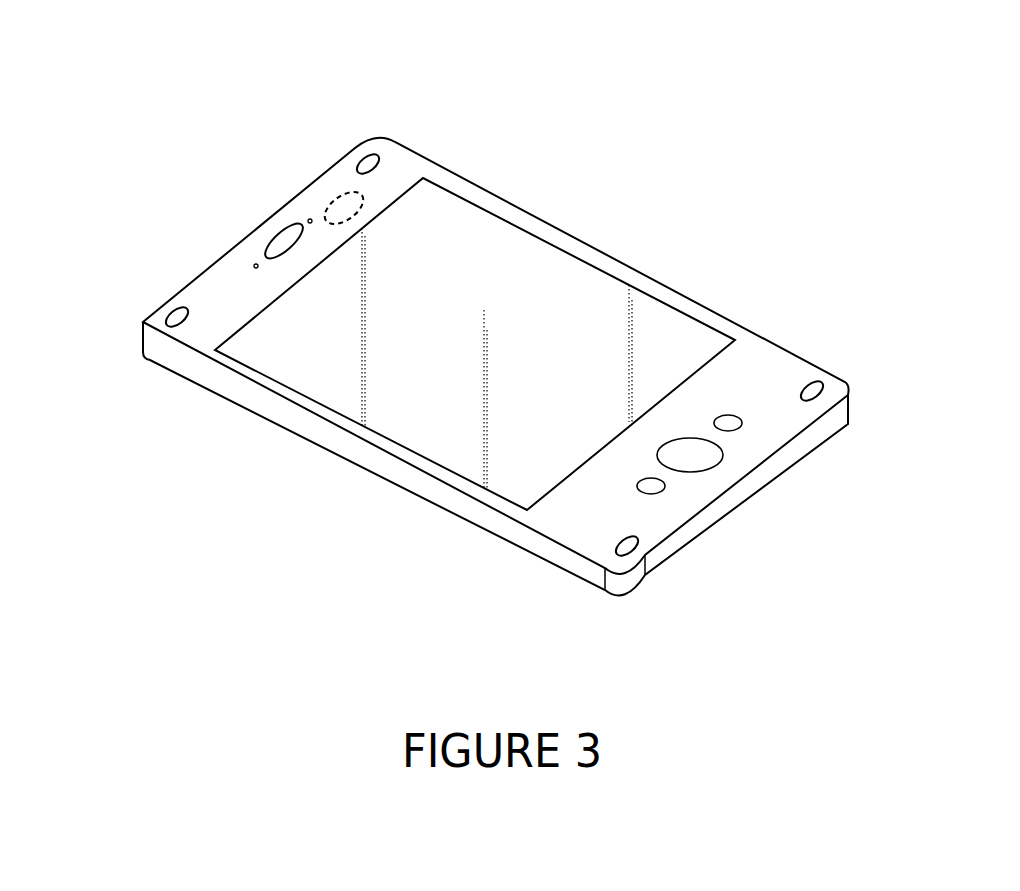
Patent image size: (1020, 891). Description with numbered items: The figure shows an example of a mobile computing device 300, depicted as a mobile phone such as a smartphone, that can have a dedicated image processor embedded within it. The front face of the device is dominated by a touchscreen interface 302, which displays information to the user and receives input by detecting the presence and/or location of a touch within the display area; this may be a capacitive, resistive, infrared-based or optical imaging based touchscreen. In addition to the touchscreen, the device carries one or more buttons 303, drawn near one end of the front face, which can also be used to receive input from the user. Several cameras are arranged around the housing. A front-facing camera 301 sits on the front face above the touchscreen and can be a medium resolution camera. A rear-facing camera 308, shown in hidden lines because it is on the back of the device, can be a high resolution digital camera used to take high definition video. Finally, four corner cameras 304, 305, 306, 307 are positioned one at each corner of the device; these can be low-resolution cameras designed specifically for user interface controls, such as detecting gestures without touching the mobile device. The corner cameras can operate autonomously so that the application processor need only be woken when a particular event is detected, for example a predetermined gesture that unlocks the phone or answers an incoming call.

The mobile computing device 300 is at (529, 110).
The front-facing camera 301 is at (257, 242).
The touchscreen interface 302 is at (528, 274).
The buttons 303 is at (724, 457).
The corner camera 304 is at (358, 158).
The corner camera 305 is at (166, 317).
The corner camera 306 is at (822, 386).
The corner camera 307 is at (634, 542).
The rear-facing camera 308 is at (334, 200).